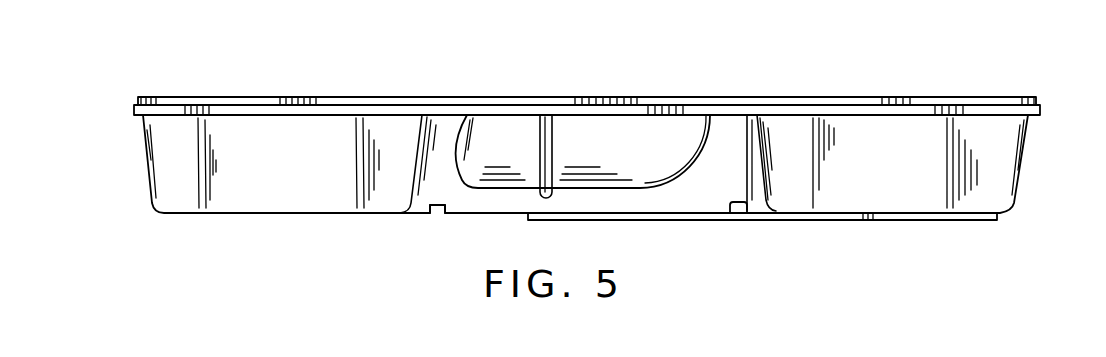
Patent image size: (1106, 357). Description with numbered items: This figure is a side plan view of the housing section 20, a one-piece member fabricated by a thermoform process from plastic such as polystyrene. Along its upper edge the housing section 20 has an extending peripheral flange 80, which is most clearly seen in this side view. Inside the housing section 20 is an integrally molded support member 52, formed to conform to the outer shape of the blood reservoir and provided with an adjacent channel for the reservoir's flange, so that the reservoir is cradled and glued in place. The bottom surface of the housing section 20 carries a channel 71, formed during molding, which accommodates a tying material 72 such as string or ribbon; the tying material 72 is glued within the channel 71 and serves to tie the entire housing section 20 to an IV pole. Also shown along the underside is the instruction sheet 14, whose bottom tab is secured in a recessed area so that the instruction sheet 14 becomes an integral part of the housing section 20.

The housing section 20 is at (955, 61).
The peripheral flange 80 is at (330, 97).
The support member 52 is at (603, 152).
The channel 71 is at (438, 214).
The tying material 72 is at (738, 213).
The instruction sheet 14 is at (835, 218).